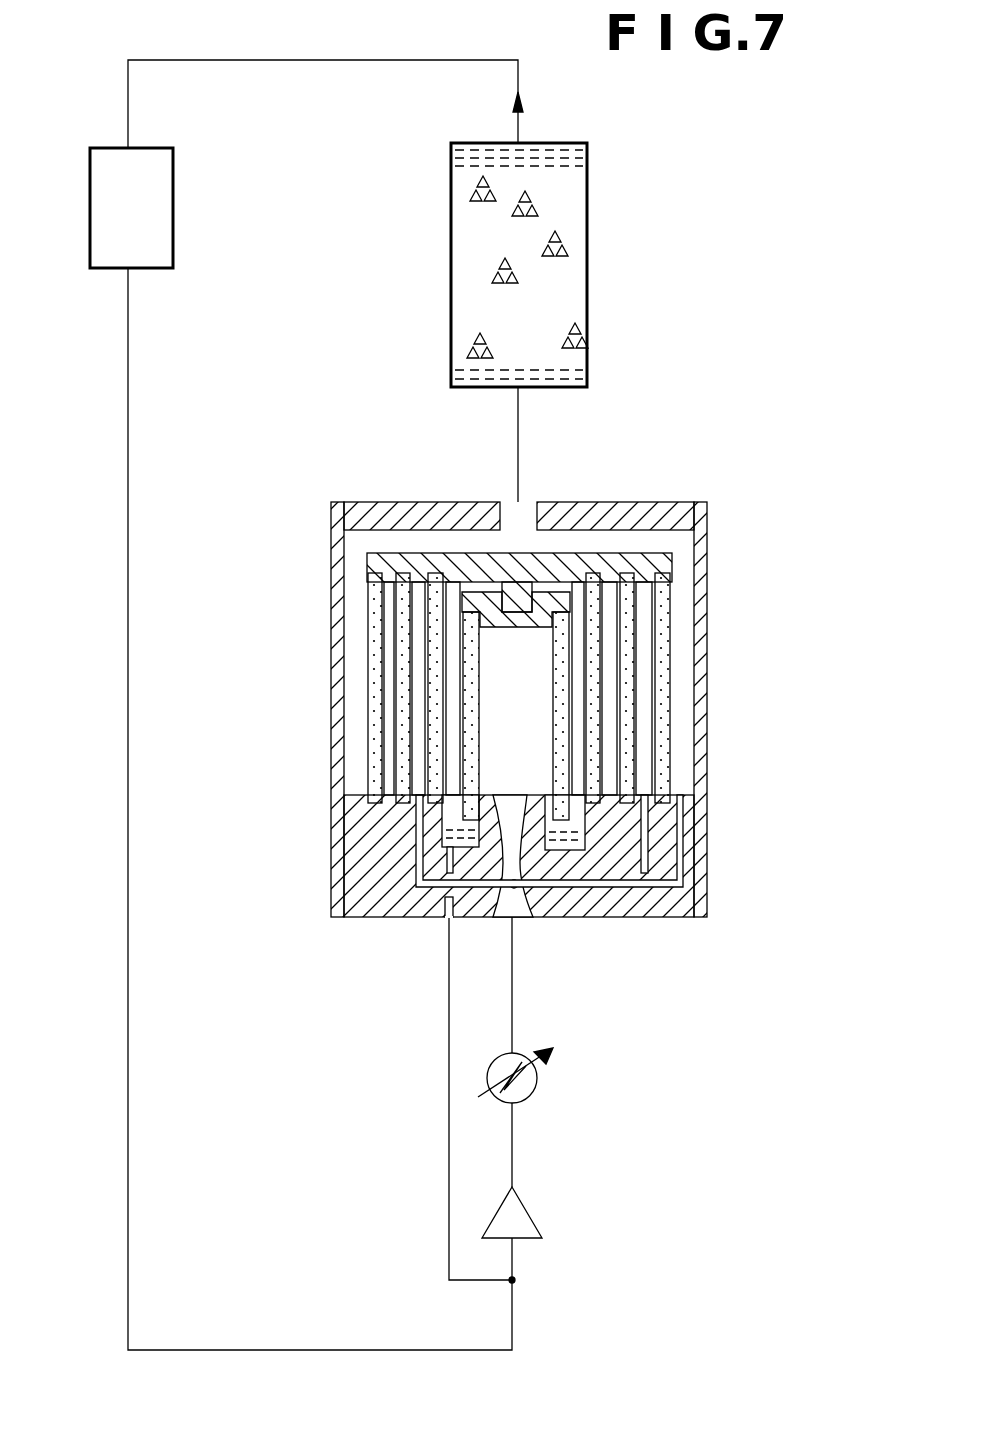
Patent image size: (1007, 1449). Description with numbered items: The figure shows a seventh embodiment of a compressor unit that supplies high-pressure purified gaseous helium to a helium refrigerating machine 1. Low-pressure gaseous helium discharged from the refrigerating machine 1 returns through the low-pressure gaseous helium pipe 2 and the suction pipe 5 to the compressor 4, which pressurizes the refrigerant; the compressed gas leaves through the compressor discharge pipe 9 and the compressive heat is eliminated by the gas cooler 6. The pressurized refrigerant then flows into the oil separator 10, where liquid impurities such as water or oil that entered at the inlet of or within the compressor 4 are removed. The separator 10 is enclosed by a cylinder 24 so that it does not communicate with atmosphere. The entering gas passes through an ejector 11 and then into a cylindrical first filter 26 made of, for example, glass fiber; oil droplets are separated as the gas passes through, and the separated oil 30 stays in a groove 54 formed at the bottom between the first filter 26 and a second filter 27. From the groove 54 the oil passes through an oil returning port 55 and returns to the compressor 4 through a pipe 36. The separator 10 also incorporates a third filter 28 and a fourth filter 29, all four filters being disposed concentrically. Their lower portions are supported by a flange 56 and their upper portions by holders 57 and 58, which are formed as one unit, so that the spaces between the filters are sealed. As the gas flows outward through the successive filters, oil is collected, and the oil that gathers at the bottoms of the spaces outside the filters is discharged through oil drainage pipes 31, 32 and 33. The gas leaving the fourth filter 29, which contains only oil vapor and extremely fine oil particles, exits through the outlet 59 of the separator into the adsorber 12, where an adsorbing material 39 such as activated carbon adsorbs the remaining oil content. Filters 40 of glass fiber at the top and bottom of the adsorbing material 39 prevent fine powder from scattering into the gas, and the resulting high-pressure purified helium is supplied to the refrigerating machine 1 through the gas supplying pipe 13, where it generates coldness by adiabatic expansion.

The helium refrigerating machine 1 is at (173, 218).
The low-pressure gaseous helium pipe 2 is at (340, 1350).
The compressor 4 is at (527, 1213).
The suction pipe 5 is at (513, 1298).
The gas cooler 6 is at (538, 1082).
The compressor discharge pipe 9 is at (513, 1003).
The oil separator 10 is at (520, 709).
The ejector 11 is at (498, 905).
The adsorber 12 is at (525, 266).
The gas supplying pipe 13 is at (345, 62).
The cylinder 24 is at (707, 575).
The first filter 26 is at (566, 748).
The second filter 27 is at (593, 710).
The third filter 28 is at (627, 686).
The fourth filter 29 is at (663, 642).
The separated oil 30 is at (445, 833).
The oil drainage pipe 31 is at (420, 877).
The oil drainage pipe 32 is at (648, 836).
The oil drainage pipe 33 is at (684, 815).
The pipe 36 is at (448, 1163).
The adsorbing material 39 is at (566, 237).
The filters 40 is at (458, 160).
The groove 54 is at (622, 905).
The oil returning port 55 is at (440, 905).
The flange 56 is at (522, 887).
The holder 57 is at (482, 600).
The holder 58 is at (662, 580).
The outlet 59 is at (525, 500).